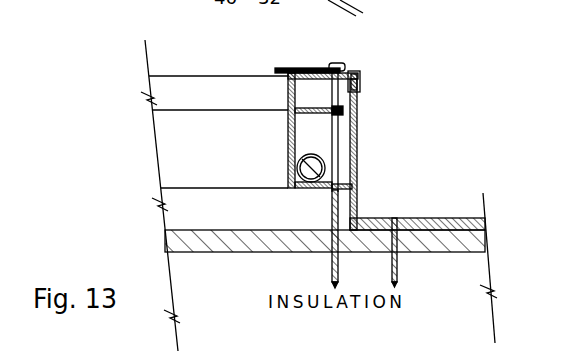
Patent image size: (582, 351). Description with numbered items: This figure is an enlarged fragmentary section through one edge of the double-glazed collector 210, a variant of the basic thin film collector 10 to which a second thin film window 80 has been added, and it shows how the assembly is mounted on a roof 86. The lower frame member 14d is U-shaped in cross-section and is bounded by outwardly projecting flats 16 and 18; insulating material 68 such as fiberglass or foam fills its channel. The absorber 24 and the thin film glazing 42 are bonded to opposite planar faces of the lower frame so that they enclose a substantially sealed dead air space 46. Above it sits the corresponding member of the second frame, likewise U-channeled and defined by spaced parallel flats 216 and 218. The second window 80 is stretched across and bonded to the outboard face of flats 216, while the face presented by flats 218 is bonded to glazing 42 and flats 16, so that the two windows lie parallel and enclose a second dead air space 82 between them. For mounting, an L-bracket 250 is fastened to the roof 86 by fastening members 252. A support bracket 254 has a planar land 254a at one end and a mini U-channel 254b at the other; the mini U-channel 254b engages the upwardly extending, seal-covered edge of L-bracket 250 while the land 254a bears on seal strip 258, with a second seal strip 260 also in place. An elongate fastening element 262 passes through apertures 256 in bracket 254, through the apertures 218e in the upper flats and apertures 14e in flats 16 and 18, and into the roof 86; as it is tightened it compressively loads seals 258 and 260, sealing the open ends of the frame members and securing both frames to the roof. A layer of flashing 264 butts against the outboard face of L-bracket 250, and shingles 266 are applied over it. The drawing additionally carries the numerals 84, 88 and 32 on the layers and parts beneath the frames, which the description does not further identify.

The flat plate thin film solar collector 10 is at (176, 132).
The double-glazed collector 210 is at (180, 34).
The second thin film window 80 is at (182, 76).
The thin film plastic glazing 42 is at (178, 103).
The dead air space 82 is at (232, 104).
The sealed dead air space 46 is at (230, 154).
The absorber 24 is at (193, 187).
The wall facing 84 is at (183, 208).
The roof 86 is at (182, 239).
The foundation 88 is at (213, 327).
The seal strip 260 is at (275, 72).
The perimetric flat 218 is at (303, 104).
The planar land 254a is at (306, 100).
The support bracket 254 is at (318, 102).
The elongate fastening element 262 is at (342, 65).
The apertures 256 is at (356, 69).
The mini U-channel 254b is at (361, 82).
The seal strip 258 is at (360, 92).
The channel web 218e is at (362, 103).
The L-bracket 250 is at (362, 118).
The flat 16 is at (292, 123).
The perimetric flat 216 is at (294, 120).
The insulating material 68 is at (322, 144).
The frame member 14d is at (292, 157).
The apertures 14e is at (358, 146).
The bottom flange 32 is at (297, 189).
The flat 18 is at (328, 190).
The layer of flashing 264 is at (360, 203).
The fastening members 252 is at (395, 222).
The shingles 266 is at (445, 218).